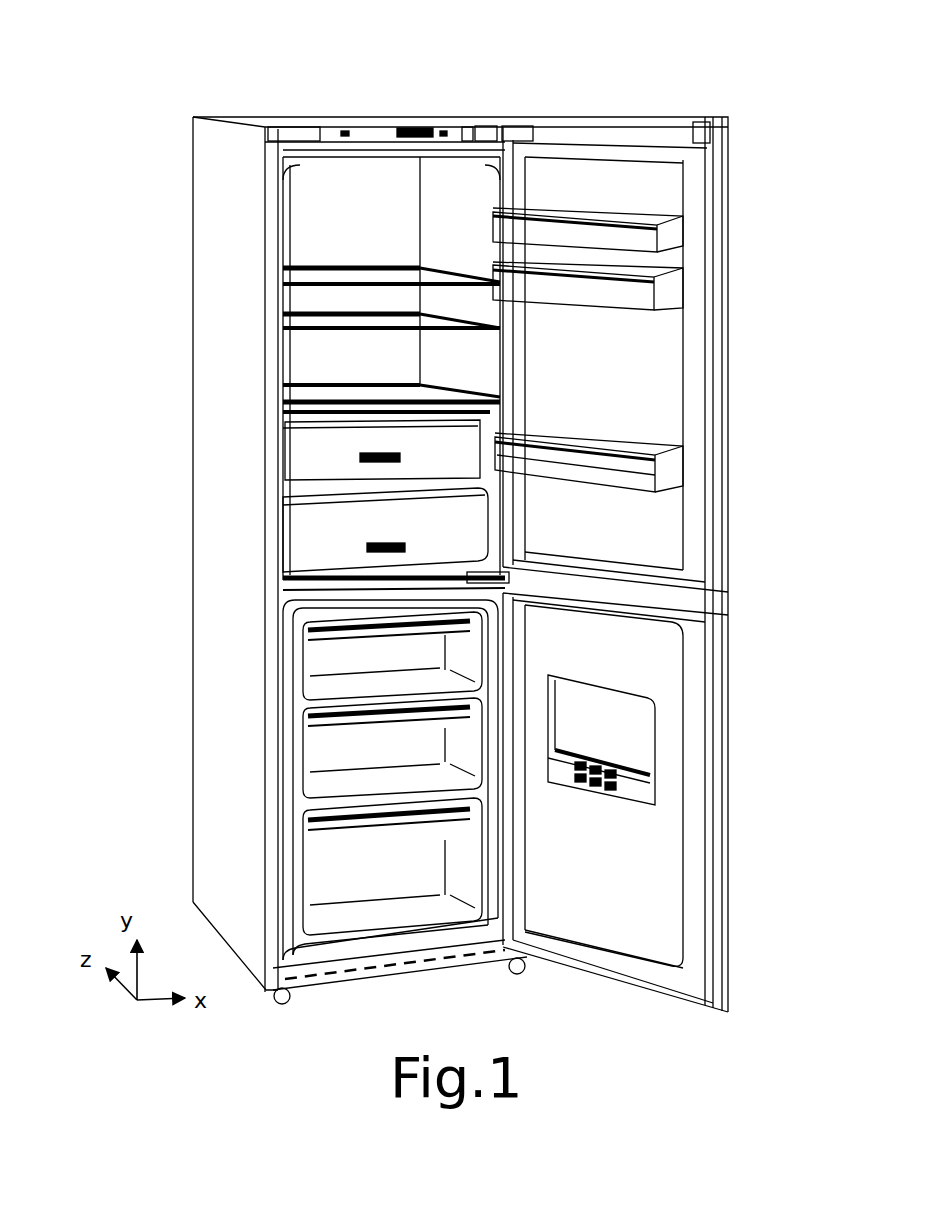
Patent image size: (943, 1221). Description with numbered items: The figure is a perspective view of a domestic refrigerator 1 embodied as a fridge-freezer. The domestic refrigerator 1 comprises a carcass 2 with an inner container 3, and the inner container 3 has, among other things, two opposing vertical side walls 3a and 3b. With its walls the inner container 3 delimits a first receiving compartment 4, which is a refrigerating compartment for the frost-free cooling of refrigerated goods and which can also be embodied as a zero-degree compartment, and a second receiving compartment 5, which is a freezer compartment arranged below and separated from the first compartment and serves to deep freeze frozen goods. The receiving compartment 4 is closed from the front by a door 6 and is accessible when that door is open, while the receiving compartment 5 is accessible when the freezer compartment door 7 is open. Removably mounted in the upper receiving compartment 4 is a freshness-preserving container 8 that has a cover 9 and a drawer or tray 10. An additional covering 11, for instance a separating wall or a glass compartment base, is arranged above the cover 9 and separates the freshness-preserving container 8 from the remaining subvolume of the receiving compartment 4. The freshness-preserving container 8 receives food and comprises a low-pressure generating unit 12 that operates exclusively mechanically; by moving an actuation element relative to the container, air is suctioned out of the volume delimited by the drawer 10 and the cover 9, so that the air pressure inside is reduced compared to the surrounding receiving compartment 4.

The domestic refrigerator 1 is at (693, 100).
The carcass 2 is at (206, 620).
The inner container 3 is at (462, 184).
The vertical side wall 3a is at (288, 174).
The vertical side wall 3b is at (490, 164).
The receiving compartment 4 is at (378, 202).
The receiving compartment 5 is at (399, 762).
The door 6 is at (730, 396).
The freezer compartment door 7 is at (735, 800).
The freshness-preserving container 8 is at (306, 455).
The cover 9 is at (396, 402).
The drawer 10 is at (306, 490).
The covering 11 is at (482, 408).
The low-pressure generating unit 12 is at (520, 480).